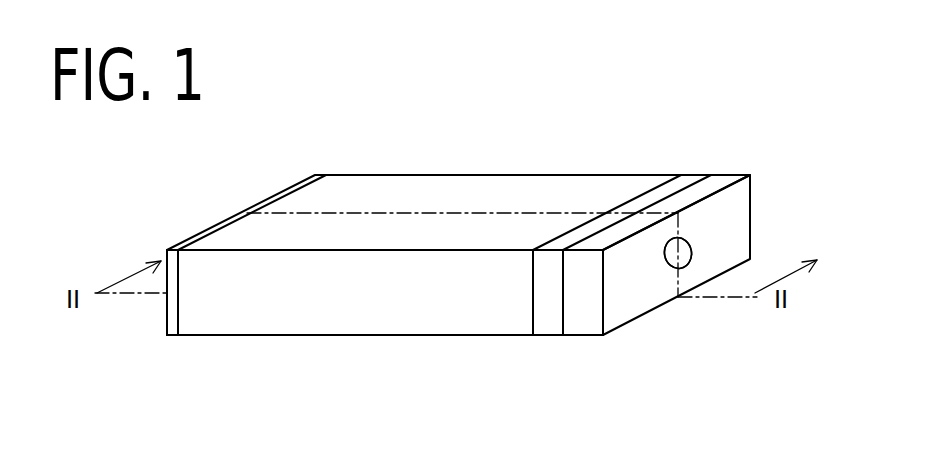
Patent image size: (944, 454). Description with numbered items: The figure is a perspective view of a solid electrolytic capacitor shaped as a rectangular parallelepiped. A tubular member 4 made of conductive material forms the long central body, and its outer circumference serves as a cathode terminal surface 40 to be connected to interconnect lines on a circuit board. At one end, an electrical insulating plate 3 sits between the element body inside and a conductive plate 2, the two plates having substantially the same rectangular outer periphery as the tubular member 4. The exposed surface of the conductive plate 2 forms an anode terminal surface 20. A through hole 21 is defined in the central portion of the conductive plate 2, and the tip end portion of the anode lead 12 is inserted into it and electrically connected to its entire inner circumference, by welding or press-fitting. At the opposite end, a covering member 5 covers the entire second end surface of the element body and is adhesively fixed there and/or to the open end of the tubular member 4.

The conductive plate 2 is at (622, 305).
The electrical insulating plate 3 is at (547, 318).
The tubular member 4 is at (418, 318).
The covering member 5 is at (175, 317).
The anode lead 12 is at (682, 257).
The anode terminal surface 20 is at (587, 335).
The through hole 21 is at (692, 243).
The cathode terminal surface 40 is at (349, 335).